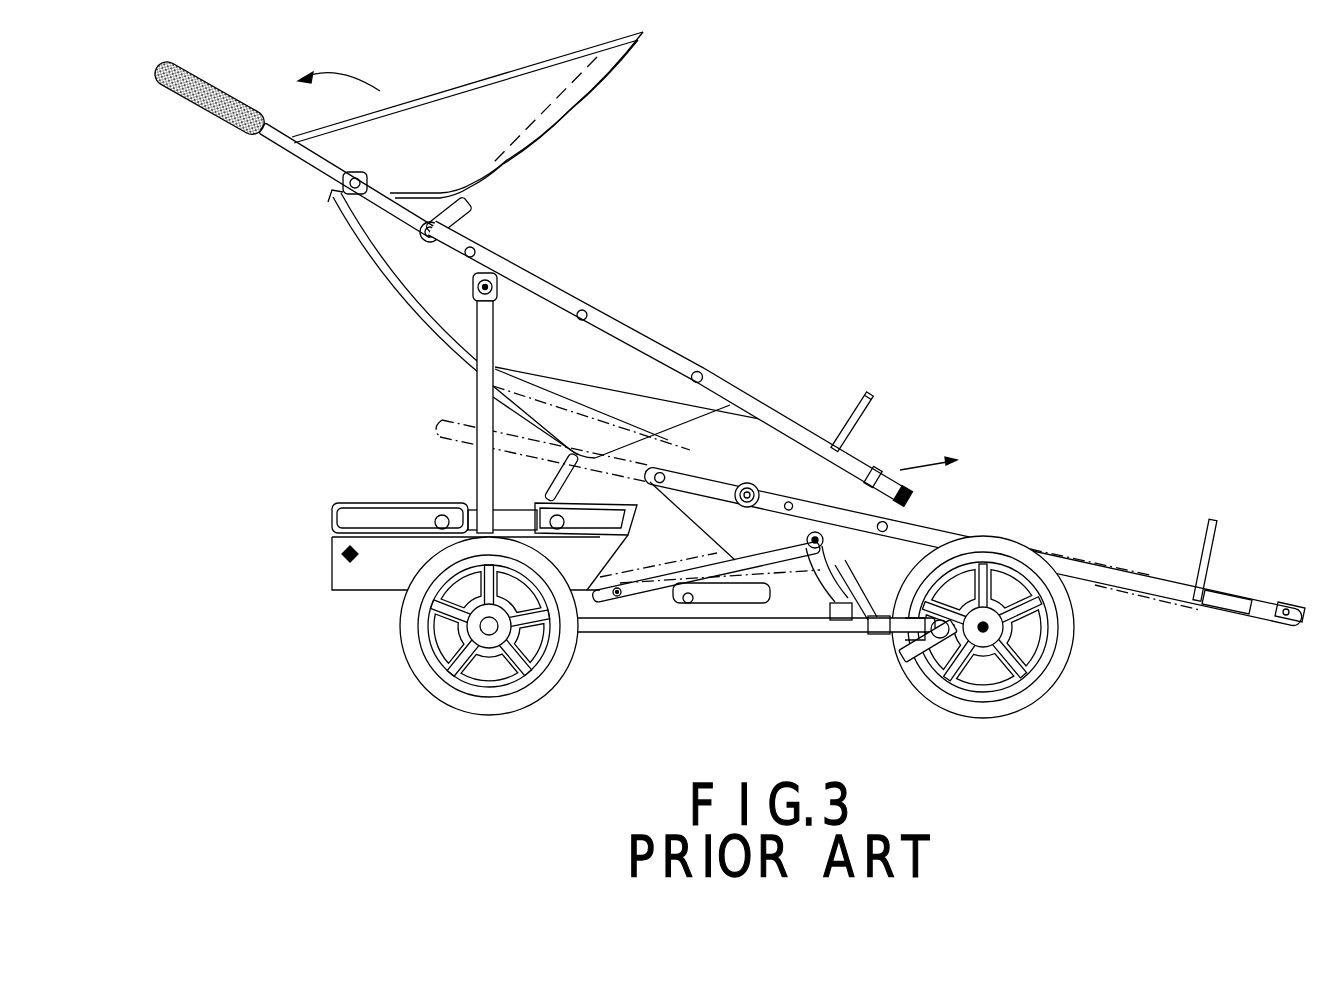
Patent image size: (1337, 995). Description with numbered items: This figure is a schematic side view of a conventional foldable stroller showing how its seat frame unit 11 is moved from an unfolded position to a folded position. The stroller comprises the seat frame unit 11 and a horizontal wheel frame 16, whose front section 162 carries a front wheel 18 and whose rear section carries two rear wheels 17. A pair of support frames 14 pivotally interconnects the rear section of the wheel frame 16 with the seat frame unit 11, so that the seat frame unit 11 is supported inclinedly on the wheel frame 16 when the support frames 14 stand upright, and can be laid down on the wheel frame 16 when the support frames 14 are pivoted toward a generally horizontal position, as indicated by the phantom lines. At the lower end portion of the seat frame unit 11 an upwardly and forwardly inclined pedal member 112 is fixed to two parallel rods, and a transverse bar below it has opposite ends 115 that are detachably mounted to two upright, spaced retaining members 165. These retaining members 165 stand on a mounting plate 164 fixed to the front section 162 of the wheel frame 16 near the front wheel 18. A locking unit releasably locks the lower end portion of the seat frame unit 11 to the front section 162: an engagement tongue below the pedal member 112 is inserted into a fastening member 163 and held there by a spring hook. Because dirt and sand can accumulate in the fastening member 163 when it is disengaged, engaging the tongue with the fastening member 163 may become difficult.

The seat frame unit 11 is at (867, 427).
The support frame 14 is at (447, 403).
The pedal member 112 is at (891, 407).
The opposite ends of the transverse bar 115 is at (979, 465).
The fastening member 163 is at (761, 476).
The retaining member 165 is at (769, 604).
The wheel frame 16 is at (747, 657).
The mounting plate 164 is at (824, 673).
The front section of the wheel frame 162 is at (898, 682).
The rear wheel 17 is at (489, 652).
The front wheel 18 is at (1007, 627).